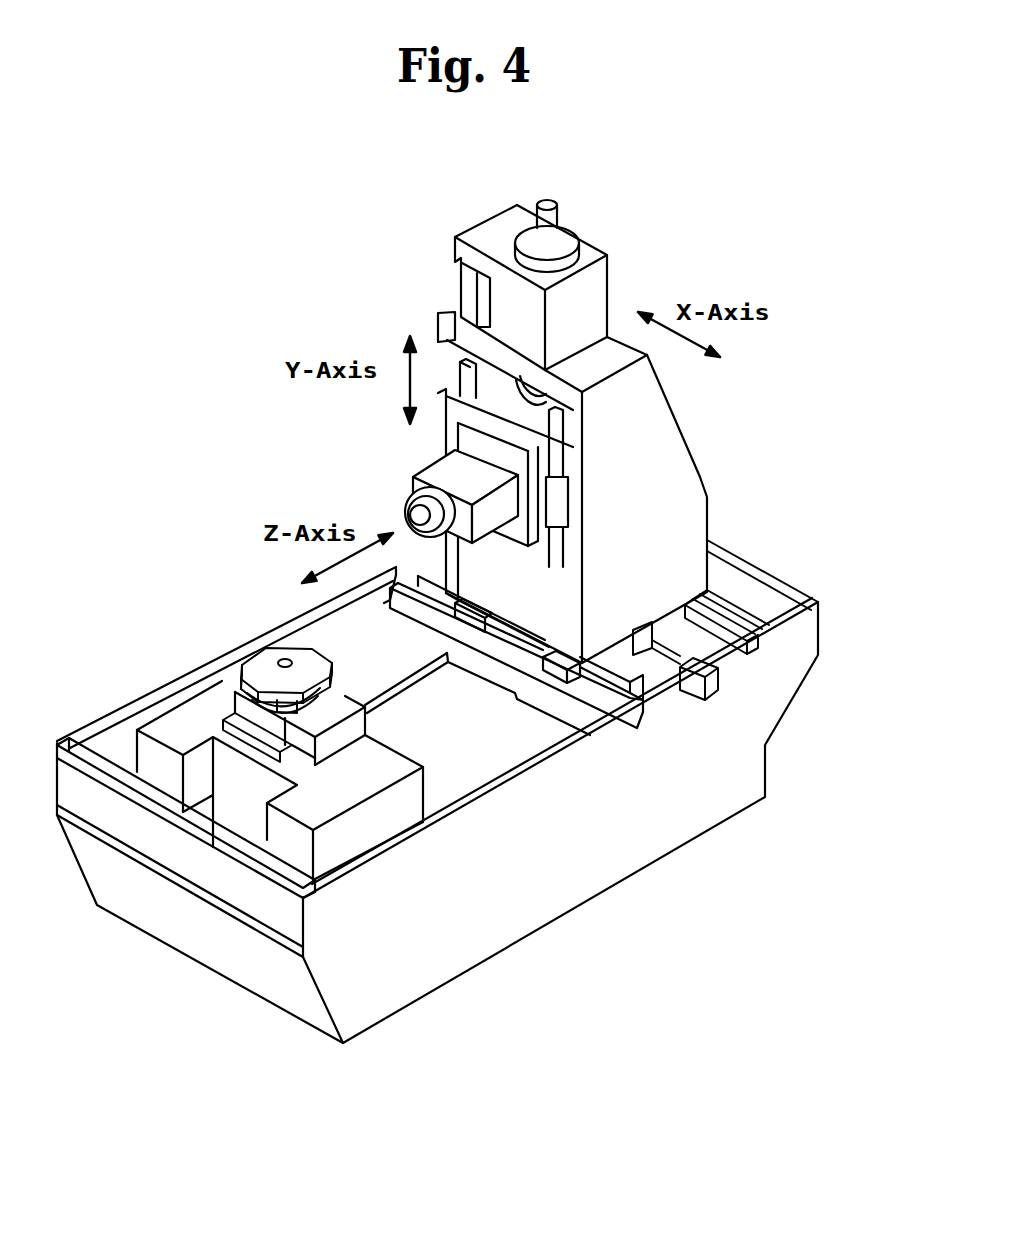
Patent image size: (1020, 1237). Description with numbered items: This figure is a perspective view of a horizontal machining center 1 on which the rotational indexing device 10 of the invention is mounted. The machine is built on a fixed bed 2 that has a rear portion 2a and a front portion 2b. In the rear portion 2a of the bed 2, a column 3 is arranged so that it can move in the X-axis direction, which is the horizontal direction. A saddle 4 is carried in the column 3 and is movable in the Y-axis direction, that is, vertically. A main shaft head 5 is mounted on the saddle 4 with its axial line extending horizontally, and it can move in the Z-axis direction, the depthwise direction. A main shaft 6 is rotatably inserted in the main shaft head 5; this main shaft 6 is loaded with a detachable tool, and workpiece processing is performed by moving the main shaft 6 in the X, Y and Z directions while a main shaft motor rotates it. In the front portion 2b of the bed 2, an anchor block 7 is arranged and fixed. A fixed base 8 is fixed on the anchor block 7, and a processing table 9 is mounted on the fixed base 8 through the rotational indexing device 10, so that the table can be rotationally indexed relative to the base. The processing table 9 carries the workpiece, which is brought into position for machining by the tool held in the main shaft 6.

The horizontal machining center 1 is at (337, 300).
The fixed bed 2 is at (660, 864).
The rear portion 2a is at (727, 652).
The front portion 2b is at (440, 797).
The column 3 is at (700, 478).
The saddle 4 is at (548, 505).
The main shaft head 5 is at (425, 462).
The main shaft 6 is at (400, 506).
The anchor block 7 is at (367, 835).
The fixed base 8 is at (215, 712).
The processing table 9 is at (270, 652).
The rotational indexing device 10 is at (228, 707).